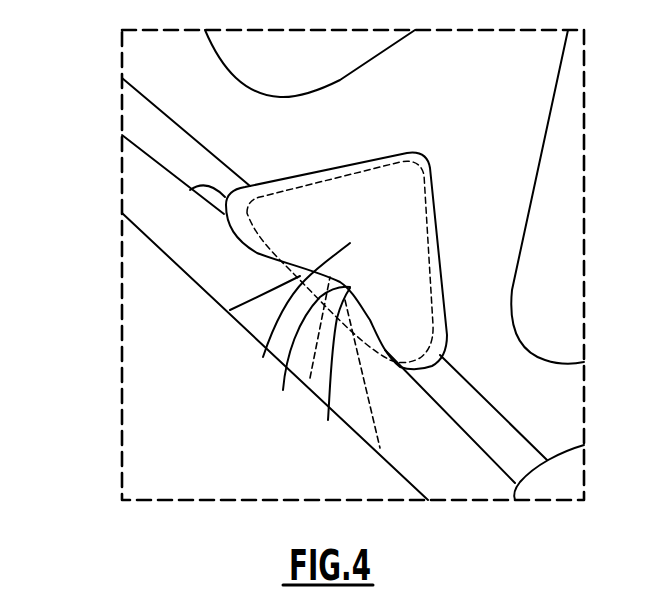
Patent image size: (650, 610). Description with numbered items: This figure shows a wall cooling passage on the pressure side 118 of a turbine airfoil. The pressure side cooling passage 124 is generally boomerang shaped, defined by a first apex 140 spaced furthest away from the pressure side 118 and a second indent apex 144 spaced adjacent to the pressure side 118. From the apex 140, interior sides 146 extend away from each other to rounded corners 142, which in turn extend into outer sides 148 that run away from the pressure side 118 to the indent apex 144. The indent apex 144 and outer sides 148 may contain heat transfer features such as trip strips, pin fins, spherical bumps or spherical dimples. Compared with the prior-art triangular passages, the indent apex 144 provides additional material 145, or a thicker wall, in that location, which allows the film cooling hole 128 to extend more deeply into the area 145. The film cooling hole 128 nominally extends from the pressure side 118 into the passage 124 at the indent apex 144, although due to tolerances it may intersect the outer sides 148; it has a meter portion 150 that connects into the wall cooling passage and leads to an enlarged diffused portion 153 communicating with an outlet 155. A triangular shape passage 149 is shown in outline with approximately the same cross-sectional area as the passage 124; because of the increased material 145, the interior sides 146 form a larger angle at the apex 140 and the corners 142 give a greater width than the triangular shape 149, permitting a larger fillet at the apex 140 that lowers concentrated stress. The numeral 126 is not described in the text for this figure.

The pressure side 118 is at (250, 330).
The pressure side cooling passage 124 is at (275, 337).
The strap 126 is at (173, 145).
The film cooling hole 128 is at (330, 395).
The first apex 140 is at (422, 159).
The rounded corners 142 is at (190, 190).
The indent apex 144 is at (349, 283).
The additional material 145 is at (231, 309).
The interior sides 146 is at (347, 164).
The outer sides 148 is at (287, 268).
The triangular shape passage 149 is at (302, 273).
The meter portion 150 is at (283, 388).
The diffused portion 153 is at (343, 377).
The outlet 155 is at (340, 414).